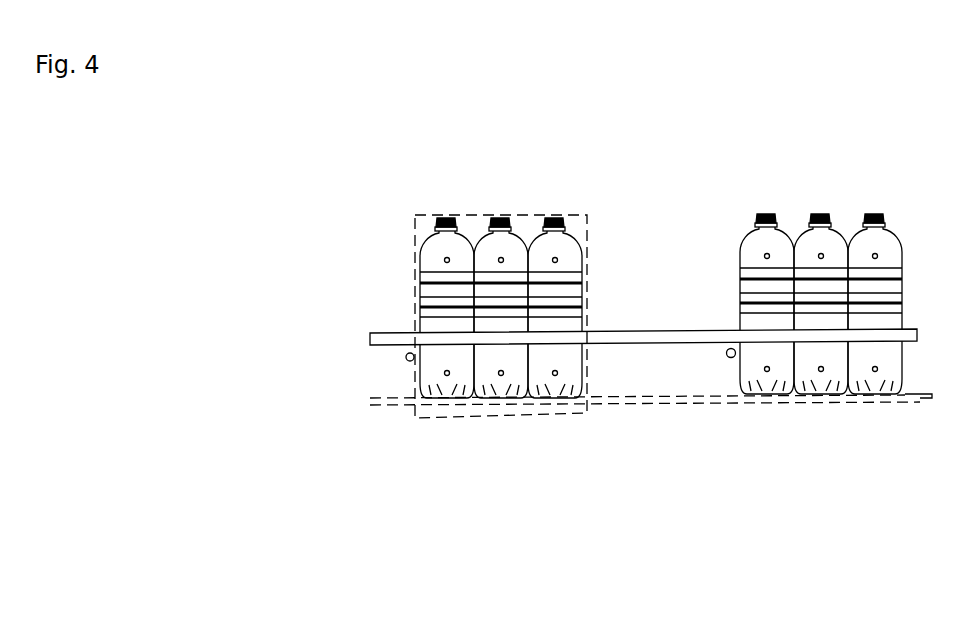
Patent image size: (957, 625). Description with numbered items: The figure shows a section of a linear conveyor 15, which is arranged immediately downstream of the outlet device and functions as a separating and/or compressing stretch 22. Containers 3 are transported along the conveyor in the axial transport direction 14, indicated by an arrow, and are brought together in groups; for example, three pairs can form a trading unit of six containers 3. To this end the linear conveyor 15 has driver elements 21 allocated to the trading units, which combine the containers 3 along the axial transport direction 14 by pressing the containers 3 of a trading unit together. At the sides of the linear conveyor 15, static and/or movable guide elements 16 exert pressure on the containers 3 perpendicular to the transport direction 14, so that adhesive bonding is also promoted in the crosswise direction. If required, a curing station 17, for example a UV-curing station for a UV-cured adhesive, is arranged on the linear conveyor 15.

The containers 3 is at (477, 207).
The axial transport direction 14 is at (823, 135).
The linear conveyor 15 is at (656, 213).
The guide elements 16 is at (638, 334).
The curing station 17 is at (478, 419).
The driver elements 21 is at (405, 358).
The separating and/or compressing stretch 22 is at (342, 507).